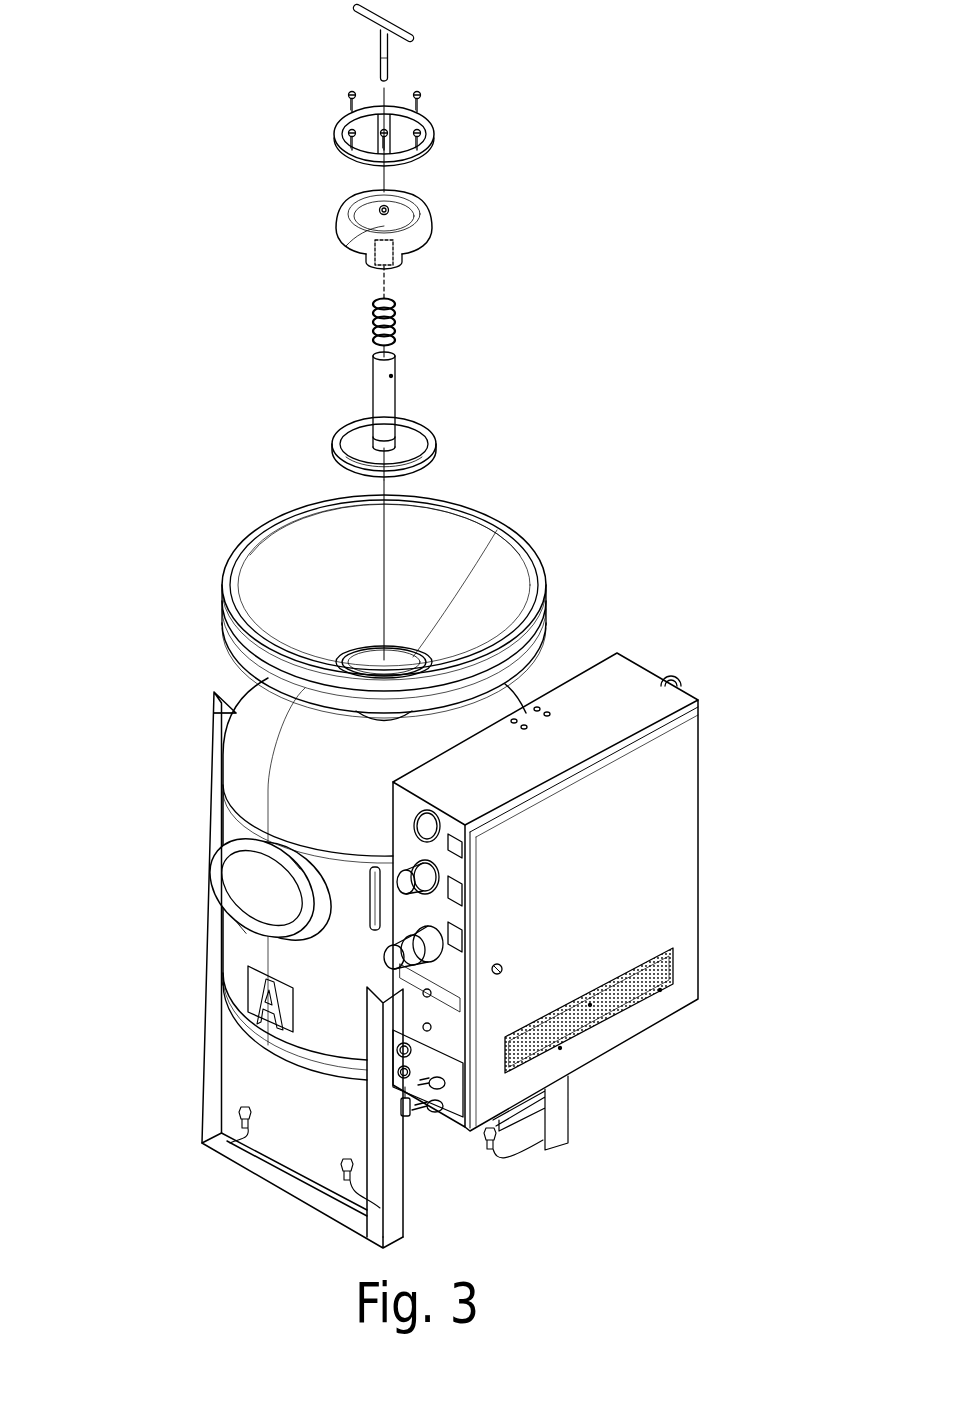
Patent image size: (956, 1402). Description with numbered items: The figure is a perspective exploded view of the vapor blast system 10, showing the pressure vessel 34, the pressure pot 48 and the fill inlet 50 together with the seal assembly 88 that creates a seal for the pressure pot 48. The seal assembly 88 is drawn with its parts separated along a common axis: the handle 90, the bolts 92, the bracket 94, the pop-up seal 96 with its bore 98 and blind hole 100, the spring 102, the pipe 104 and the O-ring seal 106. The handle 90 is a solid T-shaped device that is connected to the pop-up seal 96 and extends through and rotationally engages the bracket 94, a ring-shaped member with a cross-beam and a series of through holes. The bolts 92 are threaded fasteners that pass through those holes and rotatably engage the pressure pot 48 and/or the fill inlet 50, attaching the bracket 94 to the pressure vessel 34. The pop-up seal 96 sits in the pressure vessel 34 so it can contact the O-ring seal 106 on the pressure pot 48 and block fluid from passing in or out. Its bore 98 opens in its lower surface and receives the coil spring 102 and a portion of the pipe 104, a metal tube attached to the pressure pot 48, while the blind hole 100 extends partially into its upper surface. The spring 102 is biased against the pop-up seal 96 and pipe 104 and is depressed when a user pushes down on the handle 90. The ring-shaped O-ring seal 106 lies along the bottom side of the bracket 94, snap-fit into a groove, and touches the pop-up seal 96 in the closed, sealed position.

The vapor blast system 10 is at (121, 482).
The pressure vessel 34 is at (240, 696).
The pressure pot 48 is at (517, 690).
The fill inlet 50 is at (518, 537).
The seal assembly 88 is at (288, 4).
The handle 90 is at (410, 37).
The bolts 92 is at (421, 93).
The bracket 94 is at (434, 127).
The pop-up seal 96 is at (440, 229).
The bore 98 is at (395, 246).
The blind hole 100 is at (388, 208).
The spring 102 is at (397, 330).
The pipe 104 is at (397, 388).
The O-ring seal 106 is at (436, 444).